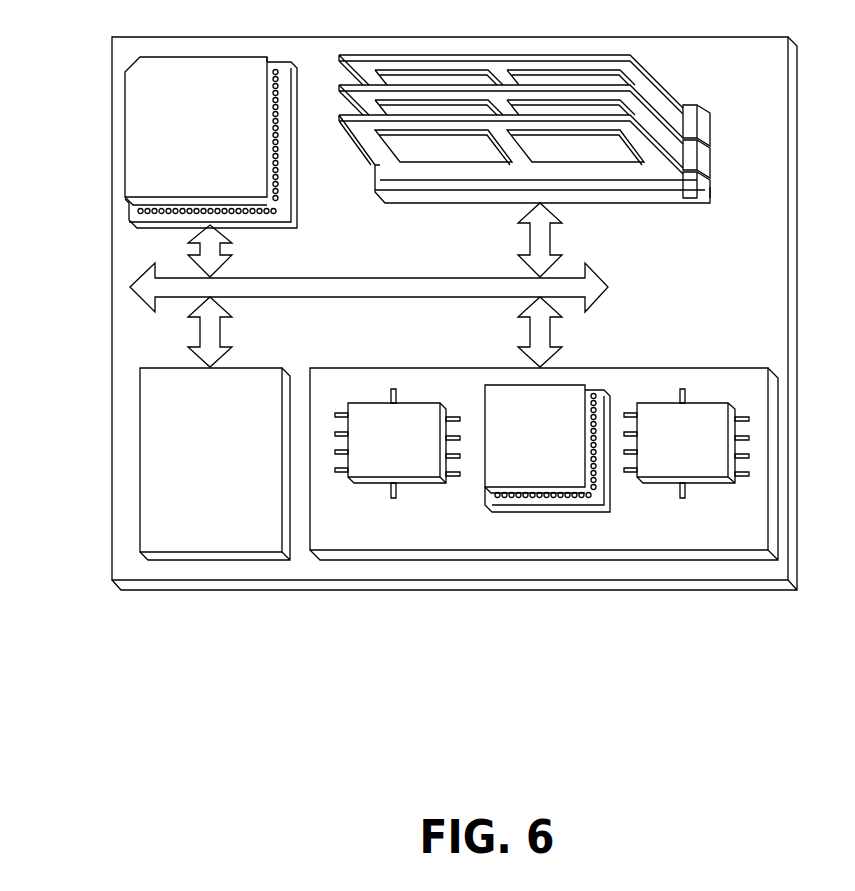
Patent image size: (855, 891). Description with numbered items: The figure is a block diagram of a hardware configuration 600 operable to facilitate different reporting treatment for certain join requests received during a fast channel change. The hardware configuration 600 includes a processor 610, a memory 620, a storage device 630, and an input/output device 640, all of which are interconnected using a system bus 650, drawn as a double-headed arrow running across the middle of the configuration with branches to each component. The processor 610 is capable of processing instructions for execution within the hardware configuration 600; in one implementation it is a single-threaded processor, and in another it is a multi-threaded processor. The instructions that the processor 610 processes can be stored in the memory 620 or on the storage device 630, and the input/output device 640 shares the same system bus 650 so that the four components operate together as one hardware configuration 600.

The hardware configuration 600 is at (91, 706).
The processor 610 is at (223, 189).
The memory 620 is at (685, 104).
The storage device 630 is at (234, 545).
The input/output device 640 is at (728, 368).
The system bus 650 is at (370, 298).